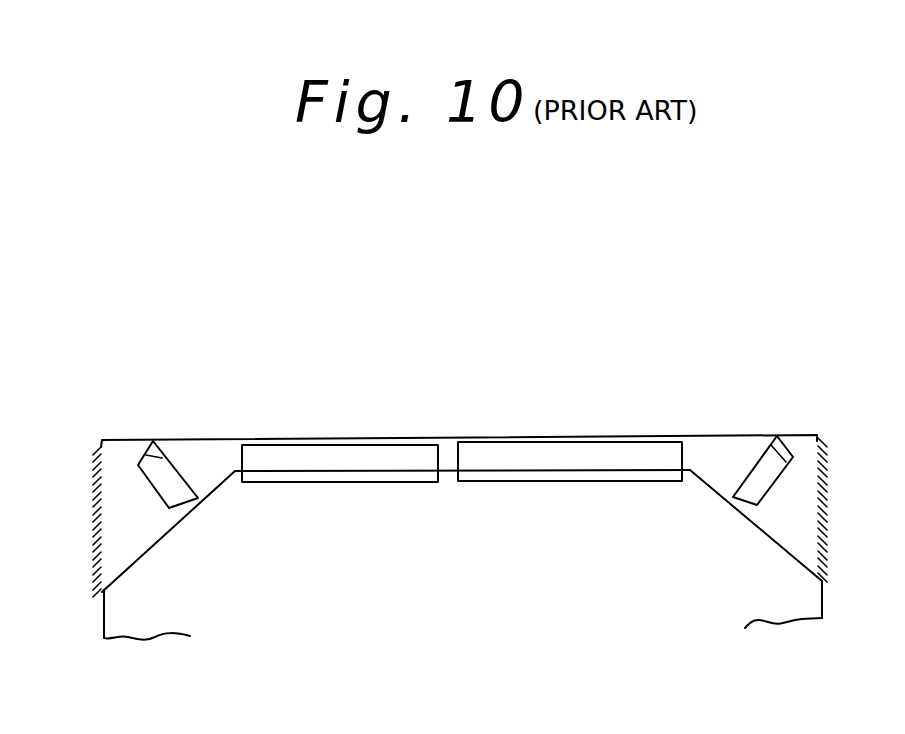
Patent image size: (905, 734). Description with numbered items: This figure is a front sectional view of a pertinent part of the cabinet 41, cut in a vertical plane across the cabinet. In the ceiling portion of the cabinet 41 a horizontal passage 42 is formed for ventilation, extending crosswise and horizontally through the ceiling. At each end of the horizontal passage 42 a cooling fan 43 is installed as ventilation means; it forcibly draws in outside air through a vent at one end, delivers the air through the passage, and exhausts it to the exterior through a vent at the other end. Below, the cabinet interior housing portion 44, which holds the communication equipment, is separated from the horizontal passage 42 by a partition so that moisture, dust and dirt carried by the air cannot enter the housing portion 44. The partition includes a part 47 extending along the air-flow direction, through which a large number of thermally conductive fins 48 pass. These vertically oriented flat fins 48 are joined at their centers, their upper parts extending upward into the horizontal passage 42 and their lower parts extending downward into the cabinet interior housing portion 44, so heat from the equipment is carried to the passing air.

The cabinet 41 is at (88, 559).
The horizontal passage 42 is at (448, 446).
The cooling fan 43 is at (152, 468).
The cabinet interior housing portion 44 is at (575, 555).
The part of the partition 47 is at (502, 470).
The fins 48 is at (340, 455).